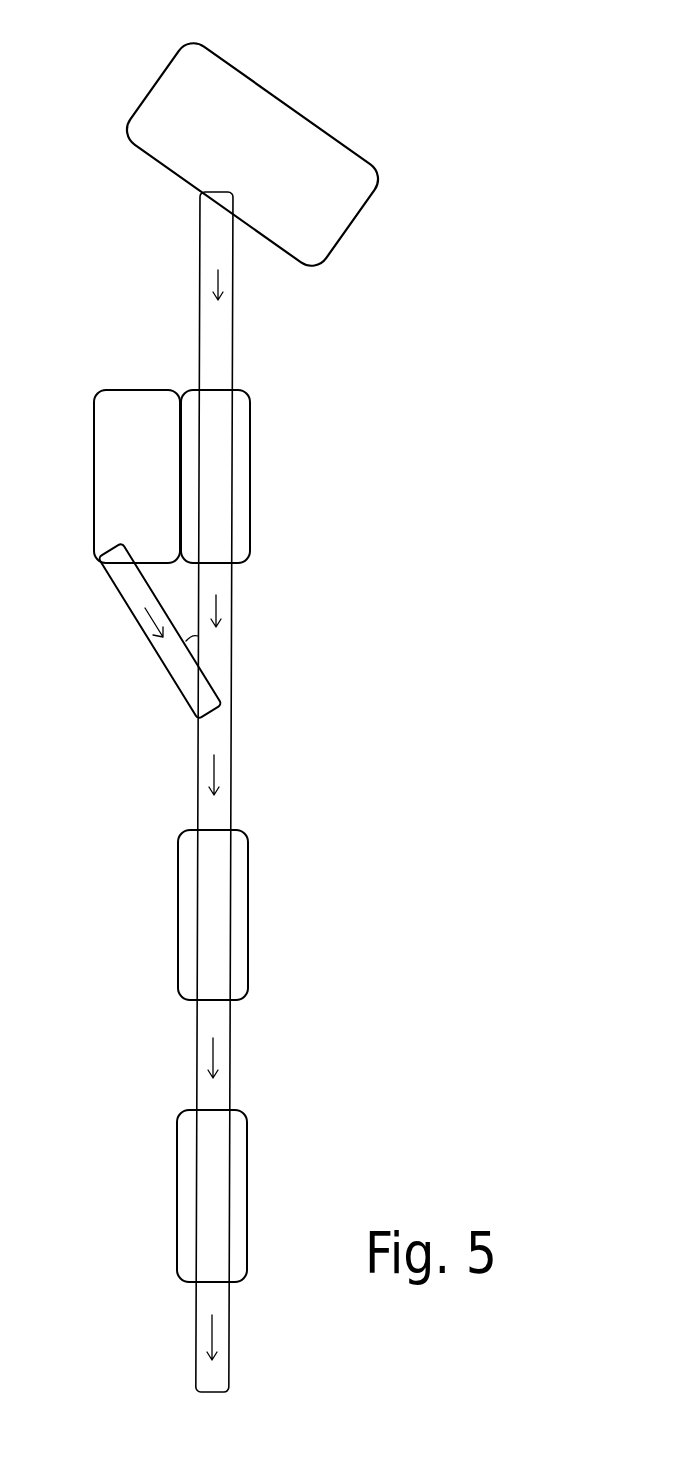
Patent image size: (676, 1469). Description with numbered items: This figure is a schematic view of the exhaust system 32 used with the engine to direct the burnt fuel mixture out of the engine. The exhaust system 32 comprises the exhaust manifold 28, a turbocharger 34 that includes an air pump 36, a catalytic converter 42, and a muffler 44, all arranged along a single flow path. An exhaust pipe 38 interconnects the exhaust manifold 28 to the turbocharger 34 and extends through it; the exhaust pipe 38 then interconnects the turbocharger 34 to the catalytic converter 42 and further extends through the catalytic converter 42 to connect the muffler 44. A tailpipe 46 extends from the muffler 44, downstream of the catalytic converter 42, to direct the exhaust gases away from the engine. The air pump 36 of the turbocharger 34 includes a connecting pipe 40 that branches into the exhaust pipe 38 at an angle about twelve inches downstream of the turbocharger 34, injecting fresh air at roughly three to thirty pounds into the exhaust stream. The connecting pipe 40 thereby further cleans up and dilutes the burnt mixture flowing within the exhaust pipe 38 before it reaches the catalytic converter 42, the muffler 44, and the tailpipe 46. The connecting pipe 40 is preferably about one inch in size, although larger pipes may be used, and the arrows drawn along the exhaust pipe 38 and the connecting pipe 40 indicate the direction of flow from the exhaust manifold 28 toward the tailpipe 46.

The exhaust manifold 28 is at (275, 164).
The exhaust system 32 is at (503, 368).
The turbocharger 34 is at (251, 437).
The air pump 36 is at (128, 390).
The exhaust pipe 38 is at (234, 308).
The connecting pipe 40 is at (143, 640).
The catalytic converter 42 is at (249, 908).
The muffler 44 is at (248, 1195).
The tailpipe 46 is at (231, 1340).